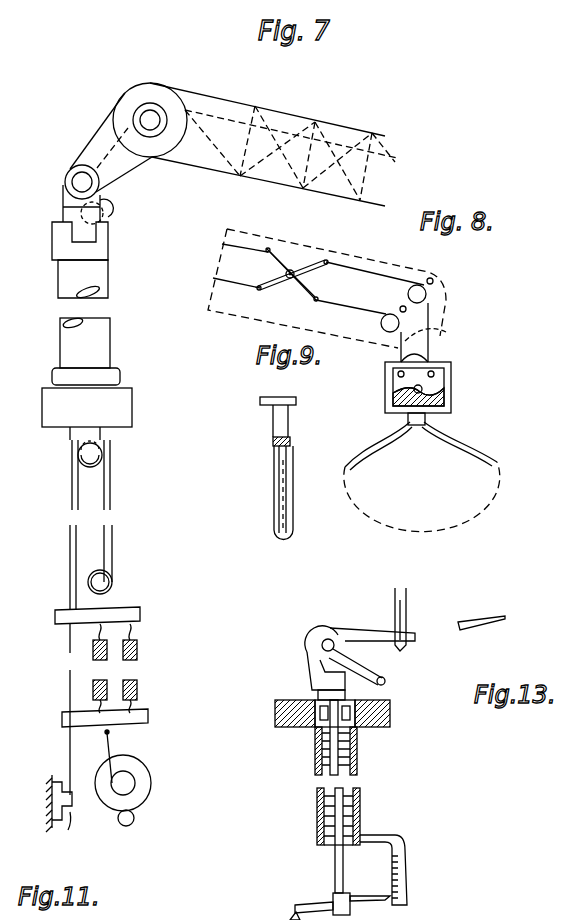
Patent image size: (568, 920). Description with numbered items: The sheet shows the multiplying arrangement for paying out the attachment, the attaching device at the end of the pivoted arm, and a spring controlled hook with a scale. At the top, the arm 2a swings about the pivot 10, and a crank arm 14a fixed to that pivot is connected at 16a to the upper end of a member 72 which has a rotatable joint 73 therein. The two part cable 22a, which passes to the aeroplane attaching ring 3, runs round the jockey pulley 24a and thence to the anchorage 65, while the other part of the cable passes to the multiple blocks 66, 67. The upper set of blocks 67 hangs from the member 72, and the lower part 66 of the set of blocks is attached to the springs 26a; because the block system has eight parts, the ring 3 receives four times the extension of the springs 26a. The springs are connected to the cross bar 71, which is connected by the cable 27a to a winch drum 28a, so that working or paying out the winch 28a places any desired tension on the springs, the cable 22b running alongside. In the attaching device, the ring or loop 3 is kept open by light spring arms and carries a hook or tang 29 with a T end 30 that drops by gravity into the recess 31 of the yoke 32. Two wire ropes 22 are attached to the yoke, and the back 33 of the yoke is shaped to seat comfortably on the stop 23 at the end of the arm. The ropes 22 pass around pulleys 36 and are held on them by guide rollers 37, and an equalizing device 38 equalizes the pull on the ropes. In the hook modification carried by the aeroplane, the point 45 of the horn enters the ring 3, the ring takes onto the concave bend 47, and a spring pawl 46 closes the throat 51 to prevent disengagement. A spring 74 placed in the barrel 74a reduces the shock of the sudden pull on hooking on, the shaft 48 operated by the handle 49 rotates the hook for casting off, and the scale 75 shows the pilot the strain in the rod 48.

In FIG. 7, the pivot 10 is at (158, 110).
In FIG. 7, the arm 2a is at (233, 104).
In FIG. 7, the two part cable 22a is at (296, 128).
In FIG. 7, the crank arm 14a is at (100, 128).
In FIG. 7, the connection 16a is at (65, 180).
In FIG. 7, the jockey pulley 24a is at (110, 203).
In FIG. 11, the member 72 is at (108, 268).
In FIG. 11, the rotatable joint 73 is at (132, 397).
In FIG. 11, the upper set of blocks 67 is at (102, 451).
In FIG. 11, the lower part of the set of blocks 66 is at (141, 612).
In FIG. 11, the springs 26a is at (110, 680).
In FIG. 11, the cross bar 71 is at (62, 720).
In FIG. 11, the cable 22b is at (70, 741).
In FIG. 11, the cable 27a is at (114, 742).
In FIG. 11, the winch drum 28a is at (150, 777).
In FIG. 11, the anchorage 65 is at (60, 819).
In FIG. 8, the wire ropes 22 is at (247, 243).
In FIG. 8, the equalizing device 38 is at (297, 268).
In FIG. 8, the guide rollers 37 is at (434, 281).
In FIG. 8, the pulleys 36 is at (427, 294).
In FIG. 8, the stop 23 is at (436, 333).
In FIG. 8, the back of the yoke 33 is at (430, 356).
In FIG. 8, the yoke 32 is at (452, 370).
In FIG. 8, the recess 31 is at (398, 392).
In FIG. 8, the T end 30 is at (424, 390).
In FIG. 9, the T end 30 is at (260, 400).
In FIG. 8, the hook or tang 29 is at (428, 421).
In FIG. 9, the hook or tang 29 is at (273, 447).
In FIG. 8, the ring or loop 3 is at (498, 500).
In FIG. 9, the ring or loop 3 is at (275, 505).
In FIG. 13, the ring or loop 3 is at (406, 614).
In FIG. 13, the throat of the hook 51 is at (376, 632).
In FIG. 13, the concave bend 47 is at (310, 645).
In FIG. 13, the spring pawl 46 is at (378, 669).
In FIG. 13, the point of the horn 45 is at (505, 617).
In FIG. 13, the spring 74 is at (358, 759).
In FIG. 13, the barrel 74a is at (360, 801).
In FIG. 13, the shaft 48 is at (335, 861).
In FIG. 13, the scale 75 is at (407, 866).
In FIG. 13, the handle 49 is at (304, 912).